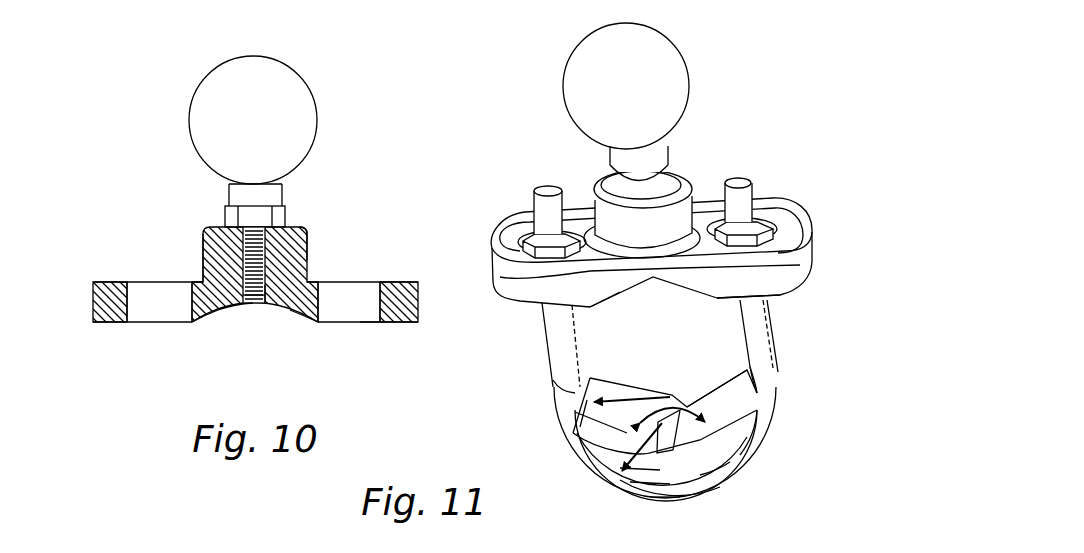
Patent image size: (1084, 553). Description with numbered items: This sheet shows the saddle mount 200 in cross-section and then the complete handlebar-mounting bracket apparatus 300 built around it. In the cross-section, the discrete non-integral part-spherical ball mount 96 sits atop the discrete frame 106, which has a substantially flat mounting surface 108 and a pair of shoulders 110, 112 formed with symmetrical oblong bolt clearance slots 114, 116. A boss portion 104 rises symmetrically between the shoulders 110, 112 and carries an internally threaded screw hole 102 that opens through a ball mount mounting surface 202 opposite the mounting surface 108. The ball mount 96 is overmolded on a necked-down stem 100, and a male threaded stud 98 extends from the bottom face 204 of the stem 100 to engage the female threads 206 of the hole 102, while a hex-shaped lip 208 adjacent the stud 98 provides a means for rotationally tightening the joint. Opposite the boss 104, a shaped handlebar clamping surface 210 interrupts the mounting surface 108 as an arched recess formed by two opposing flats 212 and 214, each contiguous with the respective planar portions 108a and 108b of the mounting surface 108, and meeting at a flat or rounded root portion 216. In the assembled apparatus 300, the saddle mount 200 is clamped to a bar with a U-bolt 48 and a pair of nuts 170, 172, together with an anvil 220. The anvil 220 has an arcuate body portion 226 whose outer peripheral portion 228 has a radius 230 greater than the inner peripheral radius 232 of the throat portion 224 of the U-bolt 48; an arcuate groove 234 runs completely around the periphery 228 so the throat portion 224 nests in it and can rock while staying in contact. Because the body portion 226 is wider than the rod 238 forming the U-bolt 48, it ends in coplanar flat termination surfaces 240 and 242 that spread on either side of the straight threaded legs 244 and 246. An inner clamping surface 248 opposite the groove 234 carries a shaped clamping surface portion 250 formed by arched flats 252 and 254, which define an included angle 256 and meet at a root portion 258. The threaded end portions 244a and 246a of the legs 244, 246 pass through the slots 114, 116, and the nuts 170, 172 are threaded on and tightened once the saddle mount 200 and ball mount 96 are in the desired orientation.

In FIG. 11, the U-bolt 48 is at (687, 494).
In FIG. 10, the part-spherical ball mount 96 is at (312, 123).
In FIG. 11, the part-spherical ball mount 96 is at (678, 72).
In FIG. 10, the male threaded stud 98 is at (208, 235).
In FIG. 10, the stem 100 is at (237, 195).
In FIG. 11, the stem 100 is at (610, 163).
In FIG. 10, the threaded screw hole 102 is at (255, 305).
In FIG. 10, the boss portion 104 is at (242, 262).
In FIG. 11, the boss portion 104 is at (673, 165).
In FIG. 10, the discrete frame 106 is at (93, 305).
In FIG. 11, the discrete frame 106 is at (503, 282).
In FIG. 10, the mounting surface 108 is at (388, 322).
In FIG. 11, the mounting surface 108 is at (783, 295).
In FIG. 10, the planar portion of mounting surface 108a is at (112, 322).
In FIG. 10, the planar portion of mounting surface 108b is at (403, 322).
In FIG. 10, the shoulder 110 is at (93, 282).
In FIG. 11, the shoulder 110 is at (502, 245).
In FIG. 10, the shoulder 112 is at (417, 282).
In FIG. 11, the shoulder 112 is at (803, 210).
In FIG. 10, the oblong bolt clearance slot 114 is at (157, 288).
In FIG. 11, the oblong bolt clearance slot 114 is at (520, 232).
In FIG. 10, the oblong bolt clearance slot 116 is at (358, 288).
In FIG. 11, the oblong bolt clearance slot 116 is at (777, 203).
In FIG. 11, the nut 170 is at (550, 252).
In FIG. 11, the nut 172 is at (760, 232).
In FIG. 10, the saddle mount 200 is at (336, 74).
In FIG. 11, the saddle mount 200 is at (810, 233).
In FIG. 10, the ball mount mounting surface 202 is at (292, 227).
In FIG. 10, the bottom face of stem 204 is at (303, 238).
In FIG. 10, the female threads 206 is at (272, 296).
In FIG. 10, the hex-shaped lip 208 is at (225, 213).
In FIG. 10, the handlebar clamping surface 210 is at (212, 313).
In FIG. 11, the handlebar clamping surface 210 is at (603, 309).
In FIG. 10, the arched flat 212 is at (225, 312).
In FIG. 10, the arched flat 214 is at (300, 313).
In FIG. 10, the root portion 216 is at (262, 307).
In FIG. 11, the root portion 216 is at (650, 280).
In FIG. 11, the anvil 220 is at (653, 478).
In FIG. 11, the throat portion 224 is at (757, 443).
In FIG. 11, the arcuate body portion 226 is at (643, 473).
In FIG. 11, the outer peripheral portion 228 is at (713, 477).
In FIG. 11, the outer radius 230 is at (660, 428).
In FIG. 11, the inner peripheral radius 232 is at (590, 402).
In FIG. 11, the arcuate groove 234 is at (753, 395).
In FIG. 11, the rod 238 is at (777, 382).
In FIG. 11, the flat termination surface 240 is at (580, 423).
In FIG. 11, the flat termination surface 242 is at (750, 410).
In FIG. 11, the threaded leg portion 244 is at (560, 367).
In FIG. 11, the threaded end portion 244a is at (547, 190).
In FIG. 11, the threaded leg portion 246 is at (770, 332).
In FIG. 11, the threaded end portion 246a is at (740, 180).
In FIG. 11, the inner clamping surface 248 is at (627, 433).
In FIG. 11, the shaped handlebar clamping surface portion 250 is at (628, 452).
In FIG. 11, the arched flat 252 is at (610, 388).
In FIG. 11, the arched flat 254 is at (730, 382).
In FIG. 11, the included angle 256 is at (710, 473).
In FIG. 11, the root portion 258 is at (682, 407).
In FIG. 11, the handlebar-mounting bracket apparatus 300 is at (751, 89).